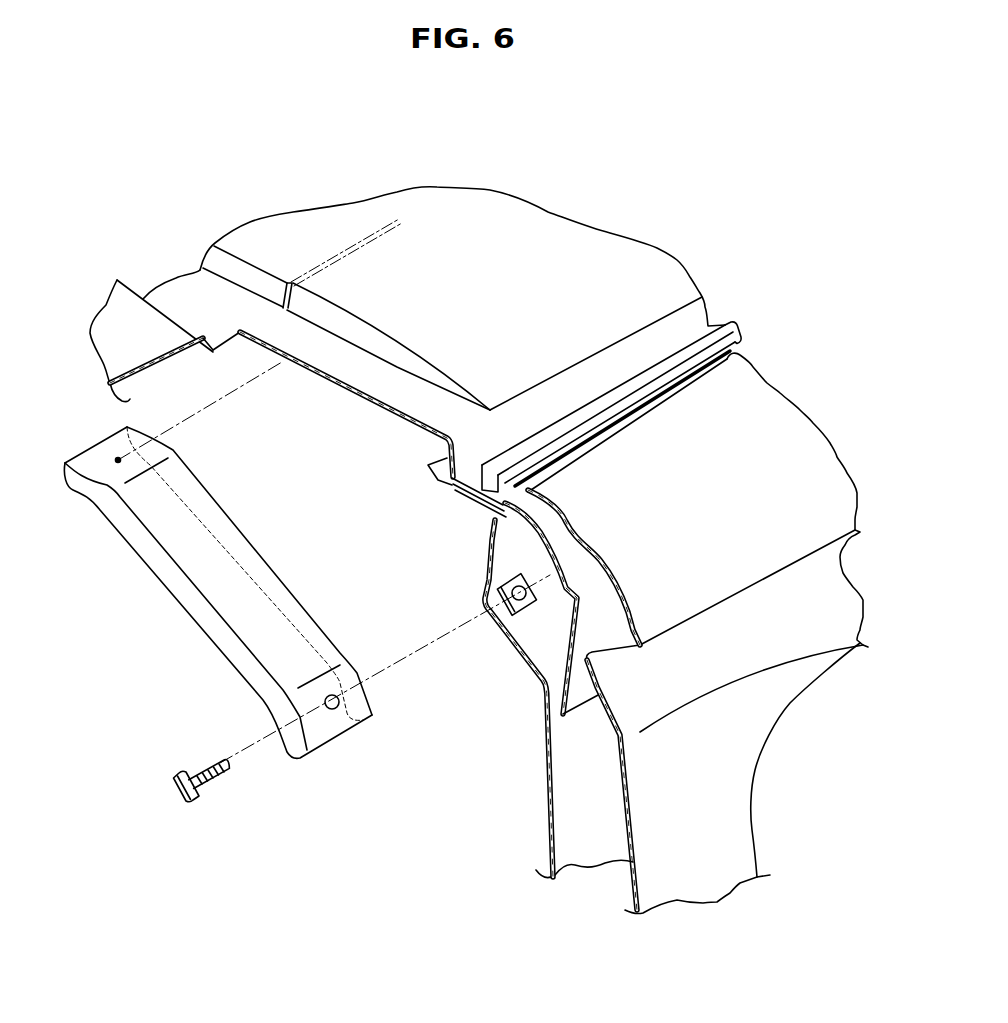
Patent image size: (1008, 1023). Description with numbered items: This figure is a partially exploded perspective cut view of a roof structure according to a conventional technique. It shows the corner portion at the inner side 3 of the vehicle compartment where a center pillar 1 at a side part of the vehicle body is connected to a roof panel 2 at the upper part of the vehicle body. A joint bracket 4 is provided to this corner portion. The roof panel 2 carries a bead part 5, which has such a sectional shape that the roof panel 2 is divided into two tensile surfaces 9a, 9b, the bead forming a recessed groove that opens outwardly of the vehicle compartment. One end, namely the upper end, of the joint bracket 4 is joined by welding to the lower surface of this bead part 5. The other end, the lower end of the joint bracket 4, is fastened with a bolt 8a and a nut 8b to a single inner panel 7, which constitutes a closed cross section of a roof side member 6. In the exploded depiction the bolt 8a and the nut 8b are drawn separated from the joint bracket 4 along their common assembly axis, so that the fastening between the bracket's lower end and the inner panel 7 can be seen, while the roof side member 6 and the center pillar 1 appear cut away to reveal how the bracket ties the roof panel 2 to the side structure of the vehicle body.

The center pillar 1 is at (708, 827).
The roof panel 2 is at (517, 235).
The inner side 3 is at (446, 755).
The joint bracket 4 is at (181, 605).
The bead part 5 is at (347, 397).
The roof side member 6 is at (770, 412).
The inner panel 7 is at (510, 637).
The bolt 8a is at (183, 802).
The nut 8b is at (497, 590).
The tensile surface 9a is at (123, 323).
The tensile surface 9b is at (280, 240).